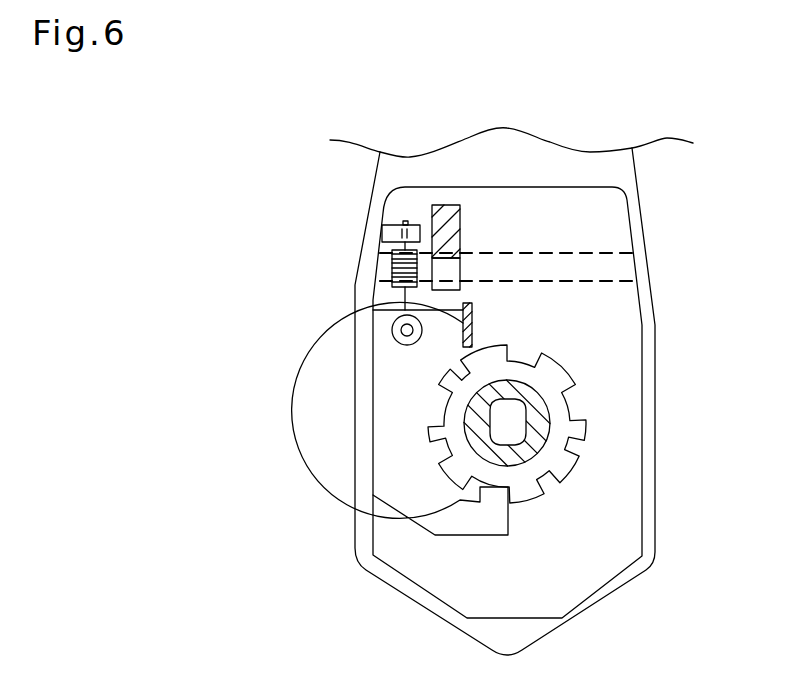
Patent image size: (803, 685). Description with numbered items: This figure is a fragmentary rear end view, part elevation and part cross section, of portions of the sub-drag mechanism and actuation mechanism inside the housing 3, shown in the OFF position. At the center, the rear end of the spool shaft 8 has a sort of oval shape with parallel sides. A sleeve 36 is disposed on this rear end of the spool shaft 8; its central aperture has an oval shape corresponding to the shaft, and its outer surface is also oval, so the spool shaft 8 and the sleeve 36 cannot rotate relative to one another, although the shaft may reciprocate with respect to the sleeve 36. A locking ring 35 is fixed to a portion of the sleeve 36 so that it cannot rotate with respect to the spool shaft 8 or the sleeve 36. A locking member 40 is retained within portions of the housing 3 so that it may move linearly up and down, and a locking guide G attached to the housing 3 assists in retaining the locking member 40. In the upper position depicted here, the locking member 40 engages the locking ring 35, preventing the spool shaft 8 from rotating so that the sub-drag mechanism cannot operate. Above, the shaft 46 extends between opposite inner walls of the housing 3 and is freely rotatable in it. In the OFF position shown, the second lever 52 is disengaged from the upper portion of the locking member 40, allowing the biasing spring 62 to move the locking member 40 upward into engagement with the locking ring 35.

The housing 3 is at (373, 228).
The spool shaft 8 is at (512, 425).
The locking ring 35 is at (573, 445).
The sleeve 36 is at (532, 425).
The locking member 40 is at (397, 477).
The shaft 46 is at (605, 267).
The second lever 52 is at (432, 208).
The biasing spring 62 is at (393, 273).
The locking guide G is at (472, 322).